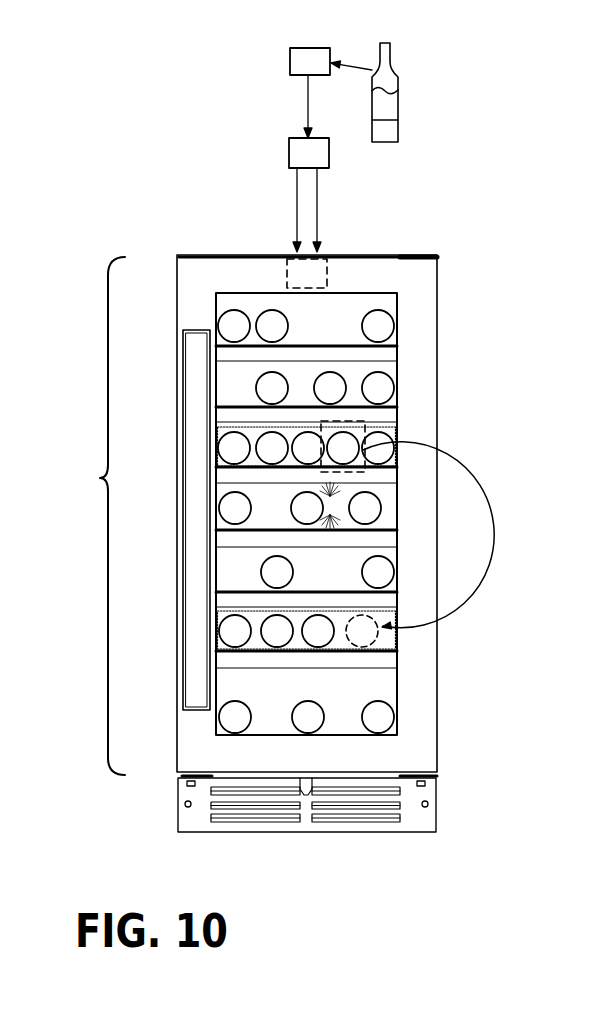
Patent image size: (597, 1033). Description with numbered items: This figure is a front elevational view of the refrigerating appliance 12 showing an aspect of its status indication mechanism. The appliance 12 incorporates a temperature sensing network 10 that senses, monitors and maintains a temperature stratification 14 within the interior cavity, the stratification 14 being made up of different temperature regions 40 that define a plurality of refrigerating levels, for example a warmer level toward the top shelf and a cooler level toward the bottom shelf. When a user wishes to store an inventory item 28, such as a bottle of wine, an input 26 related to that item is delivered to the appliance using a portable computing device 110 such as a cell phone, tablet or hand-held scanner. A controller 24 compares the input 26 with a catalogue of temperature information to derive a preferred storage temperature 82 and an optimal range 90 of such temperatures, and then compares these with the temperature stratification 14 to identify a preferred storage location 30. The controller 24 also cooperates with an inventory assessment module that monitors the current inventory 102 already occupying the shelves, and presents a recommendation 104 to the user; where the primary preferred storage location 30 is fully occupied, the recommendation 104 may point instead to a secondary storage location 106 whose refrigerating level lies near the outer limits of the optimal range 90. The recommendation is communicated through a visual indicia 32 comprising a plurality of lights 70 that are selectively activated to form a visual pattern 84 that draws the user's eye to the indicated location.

The temperature sensing network 10 is at (219, 277).
The appliance 12 is at (394, 252).
The temperature stratification 14 is at (93, 516).
The controller 24 is at (287, 277).
The input 26 is at (289, 147).
The inventory item 28 is at (390, 80).
The preferred storage location 30 is at (354, 422).
The visual indicia 32 is at (205, 453).
The temperature regions 40 is at (265, 505).
The lights 70 is at (333, 530).
The preferred storage temperature 82 is at (297, 190).
The visual pattern 84 is at (314, 510).
The optimal range 90 is at (317, 205).
The current inventory 102 is at (366, 420).
The recommendation 104 is at (488, 567).
The secondary storage location 106 is at (355, 492).
The portable computing device 110 is at (290, 62).